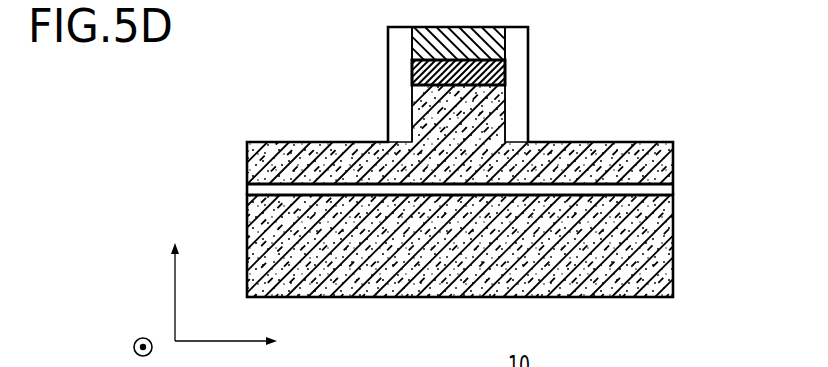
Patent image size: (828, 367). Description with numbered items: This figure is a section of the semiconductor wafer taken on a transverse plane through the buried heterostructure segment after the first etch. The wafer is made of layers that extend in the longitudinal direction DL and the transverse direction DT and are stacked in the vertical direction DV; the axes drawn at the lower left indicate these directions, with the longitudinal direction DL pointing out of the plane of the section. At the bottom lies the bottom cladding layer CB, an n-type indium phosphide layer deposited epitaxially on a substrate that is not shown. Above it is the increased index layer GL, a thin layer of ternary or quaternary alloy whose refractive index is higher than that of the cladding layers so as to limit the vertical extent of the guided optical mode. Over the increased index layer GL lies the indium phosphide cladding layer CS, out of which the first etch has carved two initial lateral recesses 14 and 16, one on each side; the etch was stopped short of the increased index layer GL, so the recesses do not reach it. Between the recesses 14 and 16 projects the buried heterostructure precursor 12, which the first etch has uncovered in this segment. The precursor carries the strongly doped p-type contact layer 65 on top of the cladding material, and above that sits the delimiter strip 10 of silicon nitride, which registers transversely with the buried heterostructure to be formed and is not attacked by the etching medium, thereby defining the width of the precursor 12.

The delimiter strip 10 is at (490, 27).
The buried heterostructure precursor 12 is at (547, 68).
The initial lateral recess 14 is at (320, 107).
The initial lateral recess 16 is at (612, 109).
The strongly doped contact layer 65 is at (412, 75).
The cladding layer CS is at (251, 158).
The increased index layer GL is at (250, 192).
The bottom cladding layer CB is at (661, 227).
The vertical direction DV is at (159, 292).
The transverse direction DT is at (241, 338).
The longitudinal direction DL is at (128, 349).